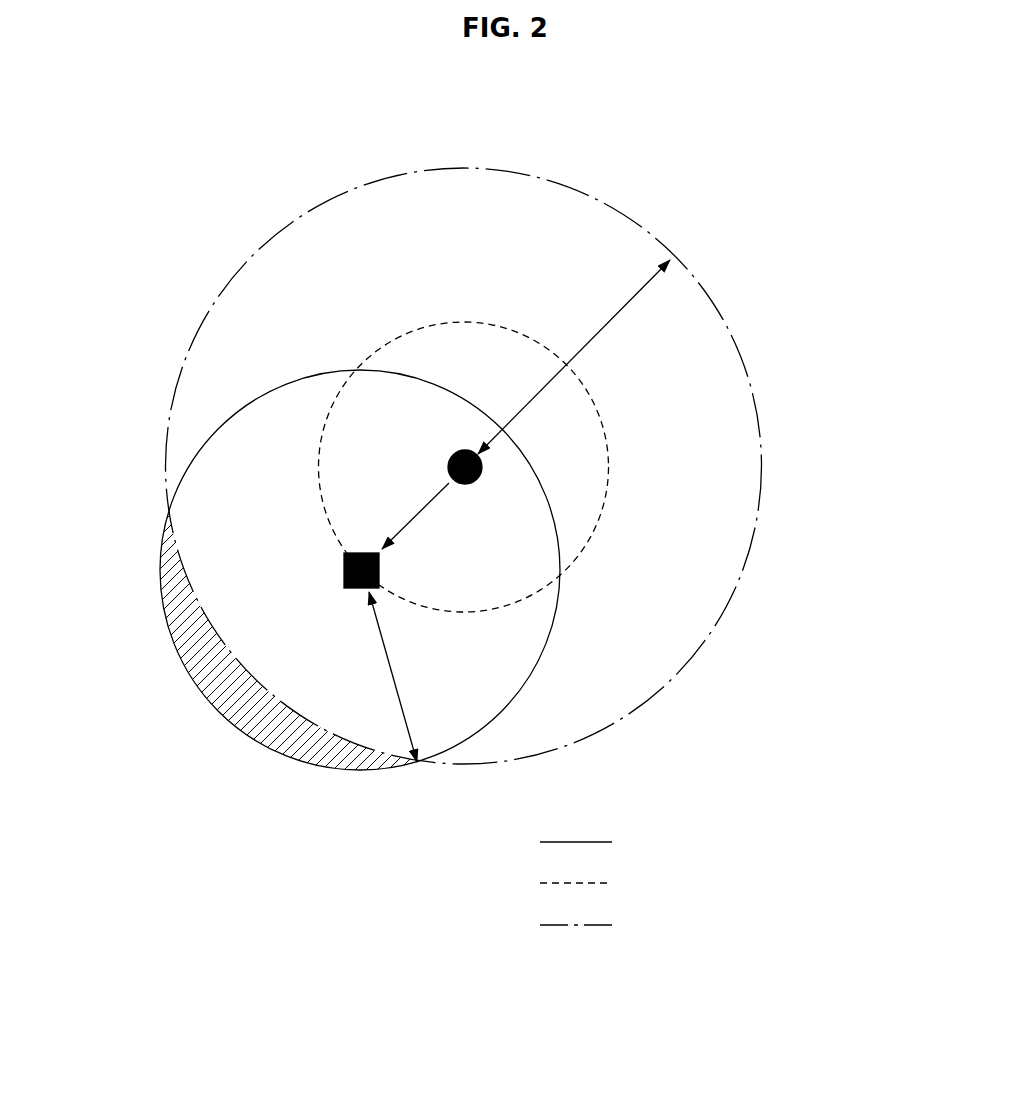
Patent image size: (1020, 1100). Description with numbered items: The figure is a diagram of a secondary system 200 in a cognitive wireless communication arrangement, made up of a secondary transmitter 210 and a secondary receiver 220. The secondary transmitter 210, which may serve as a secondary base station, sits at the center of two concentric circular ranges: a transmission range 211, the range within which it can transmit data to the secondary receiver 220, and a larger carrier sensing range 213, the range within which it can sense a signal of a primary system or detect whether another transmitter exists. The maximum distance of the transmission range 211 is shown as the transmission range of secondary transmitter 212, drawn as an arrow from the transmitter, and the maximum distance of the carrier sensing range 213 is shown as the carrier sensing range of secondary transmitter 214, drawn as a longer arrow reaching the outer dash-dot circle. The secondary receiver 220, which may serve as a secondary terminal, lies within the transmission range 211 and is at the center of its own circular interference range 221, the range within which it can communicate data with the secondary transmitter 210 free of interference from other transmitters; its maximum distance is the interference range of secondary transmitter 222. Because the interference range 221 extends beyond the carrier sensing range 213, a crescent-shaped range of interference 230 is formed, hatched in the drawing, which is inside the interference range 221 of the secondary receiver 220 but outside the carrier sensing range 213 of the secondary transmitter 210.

The secondary system 200 is at (505, 115).
The secondary transmitter 210 is at (452, 458).
The transmission range 211 is at (610, 470).
The transmission range of secondary transmitter 212 is at (473, 537).
The carrier sensing range 213 is at (637, 222).
The carrier sensing range of secondary transmitter 214 is at (637, 363).
The secondary receiver 220 is at (344, 565).
The interference range 221 is at (528, 682).
The interference range of secondary transmitter 222 is at (370, 697).
The range of interference 230 is at (264, 725).